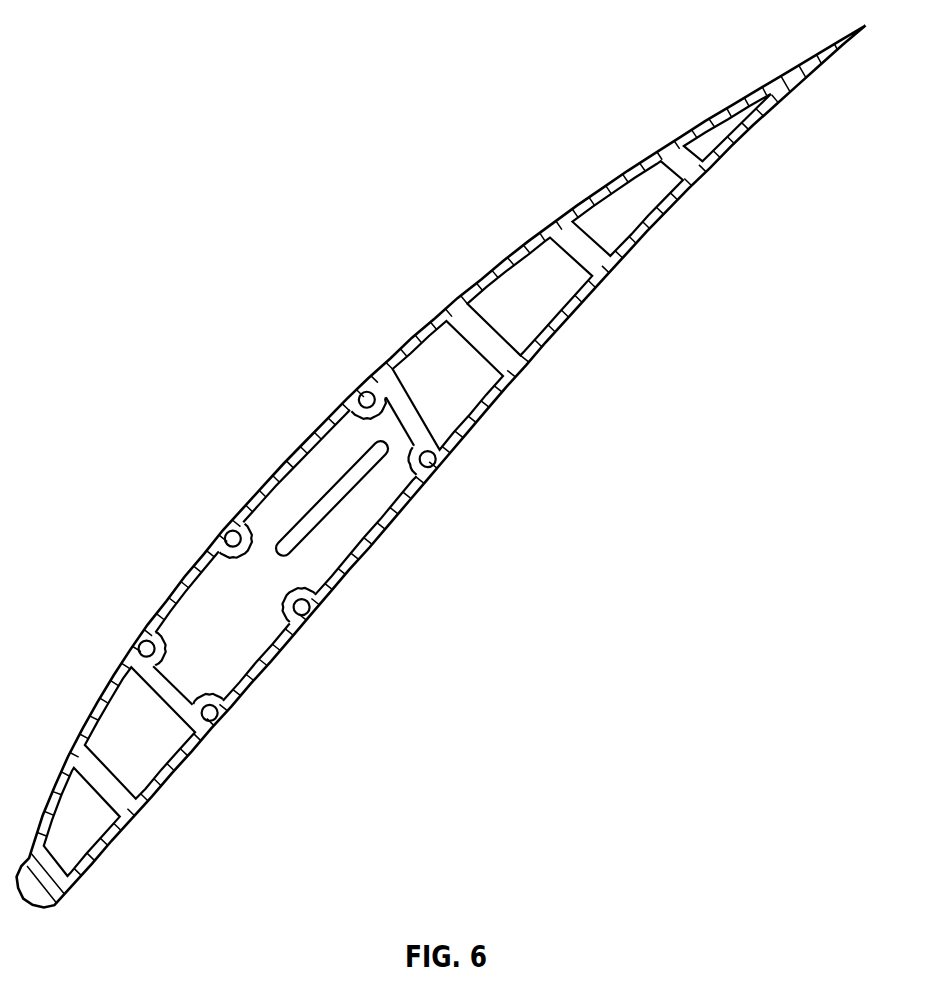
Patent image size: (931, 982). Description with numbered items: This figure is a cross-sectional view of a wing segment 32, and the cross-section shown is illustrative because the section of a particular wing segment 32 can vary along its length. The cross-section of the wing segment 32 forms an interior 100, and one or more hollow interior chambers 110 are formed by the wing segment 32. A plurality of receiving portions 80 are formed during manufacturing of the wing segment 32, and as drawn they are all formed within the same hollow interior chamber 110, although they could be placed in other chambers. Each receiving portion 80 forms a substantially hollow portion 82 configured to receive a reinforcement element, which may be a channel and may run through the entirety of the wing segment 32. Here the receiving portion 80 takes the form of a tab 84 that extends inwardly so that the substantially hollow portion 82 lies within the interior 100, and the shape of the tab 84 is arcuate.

The wing segment 32 is at (571, 203).
The receiving portion 80 is at (349, 401).
The substantially hollow portion 82 is at (433, 465).
The tab 84 is at (336, 412).
The interior 100 is at (264, 512).
The hollow interior chamber 110 is at (202, 608).